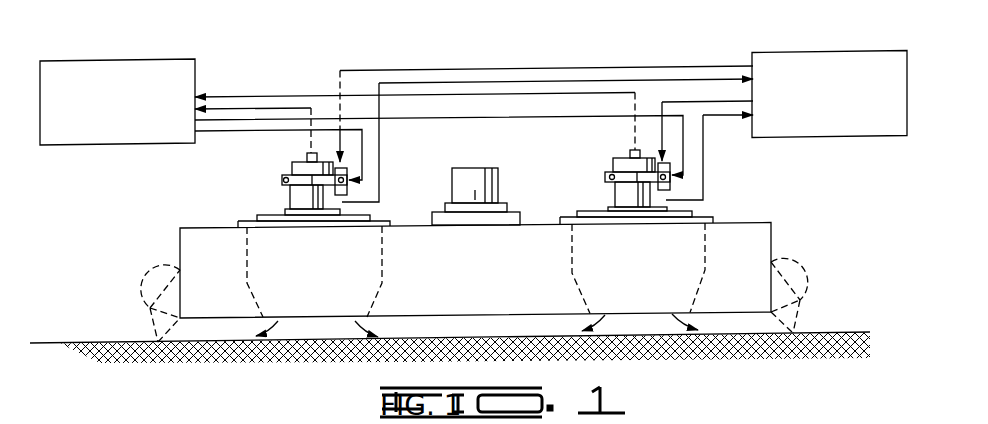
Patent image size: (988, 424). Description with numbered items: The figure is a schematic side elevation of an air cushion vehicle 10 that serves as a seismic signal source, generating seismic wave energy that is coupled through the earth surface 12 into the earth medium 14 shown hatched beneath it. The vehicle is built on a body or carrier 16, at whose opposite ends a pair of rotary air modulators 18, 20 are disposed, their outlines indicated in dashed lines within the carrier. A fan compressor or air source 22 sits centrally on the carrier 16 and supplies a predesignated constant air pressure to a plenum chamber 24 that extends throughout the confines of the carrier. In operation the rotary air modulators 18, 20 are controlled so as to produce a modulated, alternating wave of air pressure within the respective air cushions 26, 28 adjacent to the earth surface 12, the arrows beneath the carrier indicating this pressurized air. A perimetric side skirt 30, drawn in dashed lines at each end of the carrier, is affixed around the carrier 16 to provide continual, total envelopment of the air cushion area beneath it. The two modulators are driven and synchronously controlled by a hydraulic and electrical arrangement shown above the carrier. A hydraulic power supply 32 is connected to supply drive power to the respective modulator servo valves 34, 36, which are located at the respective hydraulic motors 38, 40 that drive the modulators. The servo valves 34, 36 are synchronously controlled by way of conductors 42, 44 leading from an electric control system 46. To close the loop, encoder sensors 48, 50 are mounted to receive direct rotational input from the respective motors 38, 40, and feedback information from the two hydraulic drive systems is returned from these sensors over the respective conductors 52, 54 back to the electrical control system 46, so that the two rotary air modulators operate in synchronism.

The air cushion vehicle 10 is at (537, 60).
The earth surface 12 is at (78, 343).
The earth medium 14 is at (313, 386).
The carrier 16 is at (403, 226).
The rotary air modulator 18 is at (264, 188).
The rotary air modulator 20 is at (709, 170).
The fan compressor 22 is at (480, 170).
The plenum chamber 24 is at (490, 272).
The air cushion 26 is at (325, 337).
The air cushion 28 is at (650, 331).
The perimetric side skirt 30 is at (148, 270).
The hydraulic power supply 32 is at (822, 52).
The modulator servo valve 34 is at (349, 172).
The modulator servo valve 36 is at (662, 173).
The hydraulic motor 38 is at (292, 168).
The hydraulic motor 40 is at (613, 167).
The conductor 42 is at (217, 131).
The conductor 44 is at (497, 118).
The electric control system 46 is at (130, 61).
The encoder sensor 48 is at (308, 156).
The encoder sensor 50 is at (628, 155).
The conductor 52 is at (232, 108).
The conductor 54 is at (265, 97).